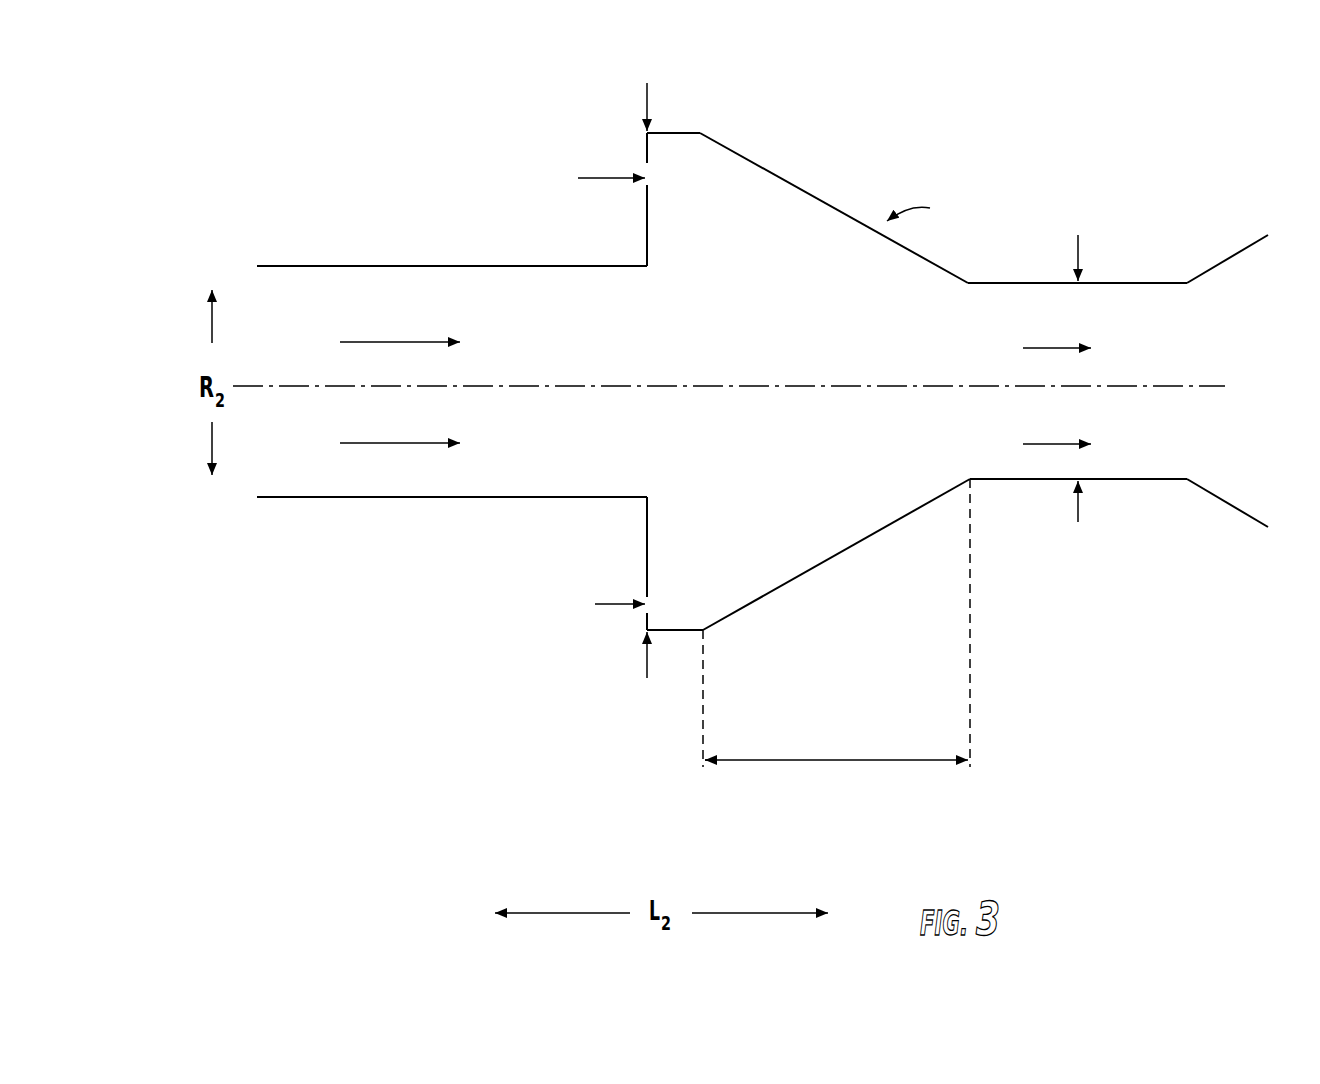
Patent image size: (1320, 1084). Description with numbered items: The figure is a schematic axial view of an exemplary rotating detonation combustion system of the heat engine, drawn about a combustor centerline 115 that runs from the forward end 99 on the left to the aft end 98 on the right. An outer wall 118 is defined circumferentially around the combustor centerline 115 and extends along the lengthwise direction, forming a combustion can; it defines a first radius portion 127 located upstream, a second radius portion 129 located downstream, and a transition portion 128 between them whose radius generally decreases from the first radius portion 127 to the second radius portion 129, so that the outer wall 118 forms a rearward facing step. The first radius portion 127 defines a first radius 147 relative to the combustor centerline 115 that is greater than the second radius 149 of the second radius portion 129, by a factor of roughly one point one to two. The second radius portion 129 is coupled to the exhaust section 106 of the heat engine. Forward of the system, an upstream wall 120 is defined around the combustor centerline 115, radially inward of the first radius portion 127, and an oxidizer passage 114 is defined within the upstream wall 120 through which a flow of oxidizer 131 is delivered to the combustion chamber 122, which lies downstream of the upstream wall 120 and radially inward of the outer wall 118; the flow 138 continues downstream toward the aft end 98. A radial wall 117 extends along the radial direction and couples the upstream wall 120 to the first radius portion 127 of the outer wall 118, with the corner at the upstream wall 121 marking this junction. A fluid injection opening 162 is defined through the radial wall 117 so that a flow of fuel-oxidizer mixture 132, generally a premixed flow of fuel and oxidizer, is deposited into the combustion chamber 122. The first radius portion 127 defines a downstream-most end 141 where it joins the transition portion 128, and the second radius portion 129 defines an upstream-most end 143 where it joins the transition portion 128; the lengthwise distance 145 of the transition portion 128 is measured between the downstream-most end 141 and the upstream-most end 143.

The aft end 98 is at (1299, 396).
The forward end 99 is at (130, 396).
The exhaust section 106 is at (1252, 239).
The oxidizer passage 114 is at (522, 327).
The combustor centerline 115 is at (1197, 386).
The radial wall 117 is at (647, 250).
The outer wall 118 is at (797, 186).
The upstream wall 120 is at (297, 267).
The upstream wall corner 121 is at (646, 494).
The combustion chamber 122 is at (783, 367).
The first radius portion 127 is at (700, 130).
The transition portion 128 is at (927, 209).
The second radius portion 129 is at (1107, 281).
The flow of oxidizer 131 is at (392, 443).
The flow of fuel-oxidizer mixture 132 is at (594, 177).
The outlet flow 138 is at (1062, 444).
The downstream-most end 141 is at (702, 636).
The upstream-most end 143 is at (976, 487).
The lengthwise distance 145 is at (835, 762).
The first radius 147 is at (647, 100).
The second radius 149 is at (1081, 254).
The fluid injection opening 162 is at (655, 604).